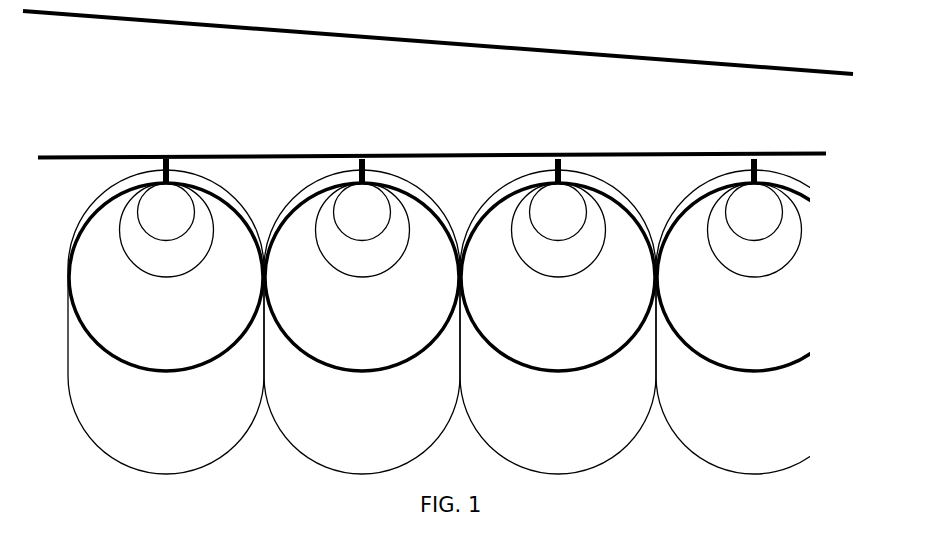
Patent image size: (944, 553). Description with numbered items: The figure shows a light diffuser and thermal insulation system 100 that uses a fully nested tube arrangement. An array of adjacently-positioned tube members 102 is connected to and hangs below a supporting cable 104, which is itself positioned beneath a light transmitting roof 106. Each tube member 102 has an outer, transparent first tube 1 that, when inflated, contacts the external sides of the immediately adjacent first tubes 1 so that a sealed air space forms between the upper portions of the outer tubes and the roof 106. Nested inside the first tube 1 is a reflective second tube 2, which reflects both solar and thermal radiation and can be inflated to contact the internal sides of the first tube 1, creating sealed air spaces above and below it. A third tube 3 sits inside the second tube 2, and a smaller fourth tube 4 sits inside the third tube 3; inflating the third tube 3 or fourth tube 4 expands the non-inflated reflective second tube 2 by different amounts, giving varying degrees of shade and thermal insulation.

The light diffuser and thermal insulation system 100 is at (438, 276).
The tube member 102 is at (318, 502).
The supporting cable 104 is at (279, 148).
The light transmitting roof 106 is at (224, 32).
The first tube 1 is at (87, 437).
The second tube 2 is at (110, 354).
The third tube 3 is at (146, 274).
The fourth tube 4 is at (150, 233).